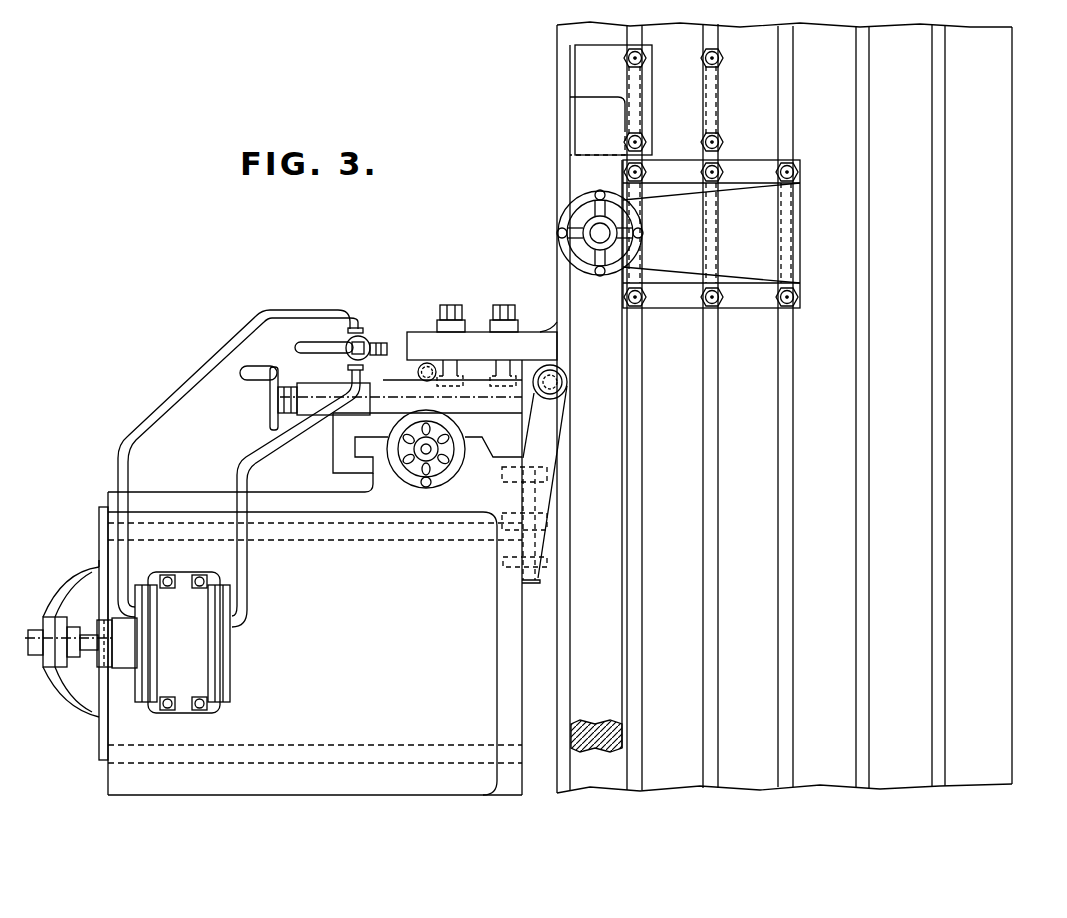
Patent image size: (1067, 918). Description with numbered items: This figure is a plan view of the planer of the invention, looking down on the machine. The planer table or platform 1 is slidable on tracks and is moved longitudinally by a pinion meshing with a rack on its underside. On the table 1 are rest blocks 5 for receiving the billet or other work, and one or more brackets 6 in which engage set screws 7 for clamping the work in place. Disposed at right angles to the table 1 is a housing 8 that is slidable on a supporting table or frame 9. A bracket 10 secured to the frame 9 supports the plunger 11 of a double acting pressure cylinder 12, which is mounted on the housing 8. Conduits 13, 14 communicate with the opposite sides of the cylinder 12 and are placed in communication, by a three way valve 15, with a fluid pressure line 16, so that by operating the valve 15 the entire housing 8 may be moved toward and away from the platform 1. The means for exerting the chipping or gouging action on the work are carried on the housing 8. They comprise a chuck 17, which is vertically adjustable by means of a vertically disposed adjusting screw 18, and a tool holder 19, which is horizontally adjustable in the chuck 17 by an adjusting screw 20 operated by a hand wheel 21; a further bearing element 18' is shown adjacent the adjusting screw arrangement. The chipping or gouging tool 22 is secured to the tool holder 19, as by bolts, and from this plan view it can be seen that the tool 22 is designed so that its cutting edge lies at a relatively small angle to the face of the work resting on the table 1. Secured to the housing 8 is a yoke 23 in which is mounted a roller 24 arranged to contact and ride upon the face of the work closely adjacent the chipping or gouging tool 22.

The planer table 1 is at (1007, 273).
The rest blocks 5 is at (590, 75).
The brackets 6 is at (711, 234).
The set screws 7 is at (592, 227).
The housing 8 is at (210, 493).
The supporting frame 9 is at (100, 735).
The bracket 10 is at (53, 605).
The plunger 11 is at (92, 645).
The double acting pressure cylinder 12 is at (163, 642).
The conduit 13 is at (258, 451).
The conduit 14 is at (269, 312).
The three way valve 15 is at (366, 340).
The fluid pressure line 16 is at (387, 376).
The chuck 17 is at (333, 446).
The adjusting screw 18 is at (397, 492).
The bearing roller 18' is at (407, 525).
The tool holder 19 is at (402, 348).
The adjusting screw 20 is at (290, 394).
The hand wheel 21 is at (272, 397).
The chipping or gouging tool 22 is at (465, 336).
The yoke 23 is at (534, 484).
The roller 24 is at (547, 366).